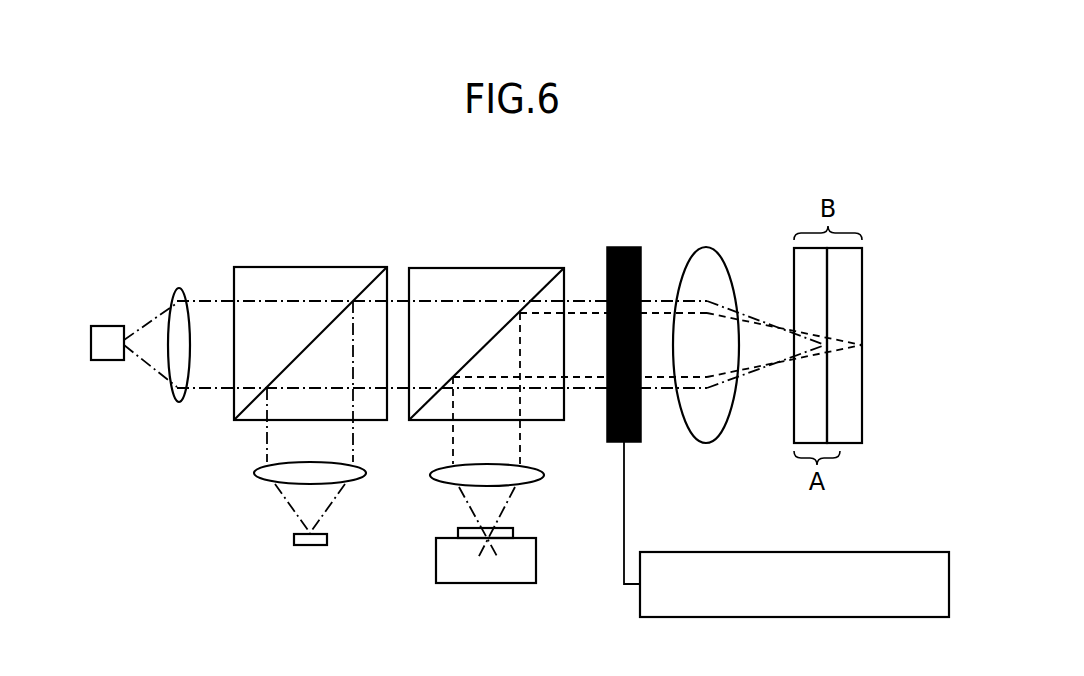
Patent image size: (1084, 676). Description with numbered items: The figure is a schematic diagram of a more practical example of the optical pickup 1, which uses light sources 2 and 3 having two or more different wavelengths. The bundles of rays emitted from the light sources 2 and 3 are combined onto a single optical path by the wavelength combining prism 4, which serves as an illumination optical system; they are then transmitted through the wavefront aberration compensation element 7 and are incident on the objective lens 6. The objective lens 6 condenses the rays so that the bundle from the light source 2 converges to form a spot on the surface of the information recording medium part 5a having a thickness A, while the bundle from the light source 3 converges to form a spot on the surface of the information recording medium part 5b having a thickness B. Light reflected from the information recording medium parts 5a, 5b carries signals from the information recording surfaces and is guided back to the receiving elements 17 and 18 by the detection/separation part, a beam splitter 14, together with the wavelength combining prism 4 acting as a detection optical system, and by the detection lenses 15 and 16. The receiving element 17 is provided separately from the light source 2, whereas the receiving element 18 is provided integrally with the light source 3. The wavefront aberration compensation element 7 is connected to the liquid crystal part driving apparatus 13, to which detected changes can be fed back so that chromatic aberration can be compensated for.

The optical pickup 1 is at (184, 212).
The light source 2 is at (106, 326).
The light source 3 is at (478, 584).
The wavelength combining prism 4 is at (486, 268).
The information recording medium part 5a is at (803, 426).
The information recording medium part 5b is at (853, 270).
The objective lens 6 is at (707, 247).
The wavefront aberration compensation element 7 is at (624, 247).
The liquid crystal part driving apparatus 13 is at (913, 552).
The detection/separation part (beam splitter) 14 is at (309, 267).
The detection lens 15 is at (255, 473).
The detection lens 16 is at (545, 475).
The receiving element 17 is at (315, 545).
The receiving element 18 is at (508, 584).